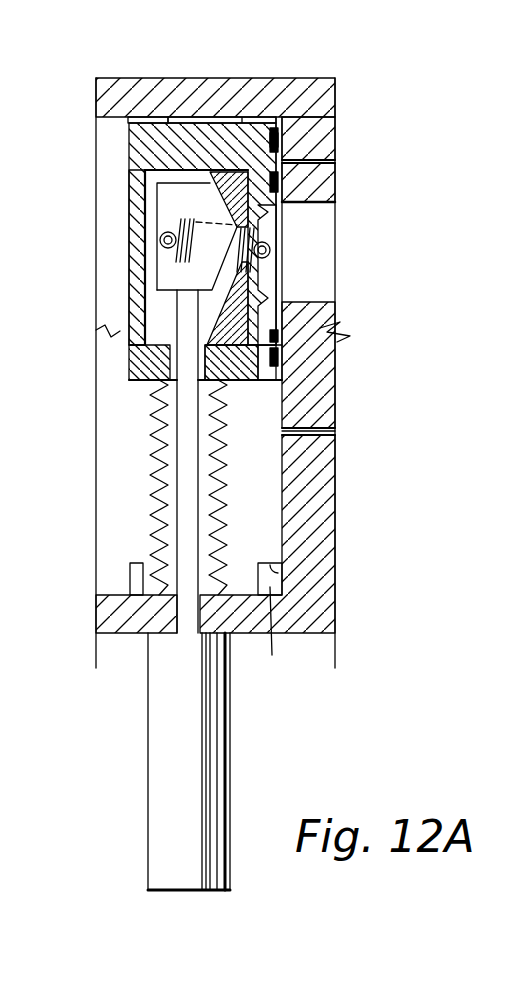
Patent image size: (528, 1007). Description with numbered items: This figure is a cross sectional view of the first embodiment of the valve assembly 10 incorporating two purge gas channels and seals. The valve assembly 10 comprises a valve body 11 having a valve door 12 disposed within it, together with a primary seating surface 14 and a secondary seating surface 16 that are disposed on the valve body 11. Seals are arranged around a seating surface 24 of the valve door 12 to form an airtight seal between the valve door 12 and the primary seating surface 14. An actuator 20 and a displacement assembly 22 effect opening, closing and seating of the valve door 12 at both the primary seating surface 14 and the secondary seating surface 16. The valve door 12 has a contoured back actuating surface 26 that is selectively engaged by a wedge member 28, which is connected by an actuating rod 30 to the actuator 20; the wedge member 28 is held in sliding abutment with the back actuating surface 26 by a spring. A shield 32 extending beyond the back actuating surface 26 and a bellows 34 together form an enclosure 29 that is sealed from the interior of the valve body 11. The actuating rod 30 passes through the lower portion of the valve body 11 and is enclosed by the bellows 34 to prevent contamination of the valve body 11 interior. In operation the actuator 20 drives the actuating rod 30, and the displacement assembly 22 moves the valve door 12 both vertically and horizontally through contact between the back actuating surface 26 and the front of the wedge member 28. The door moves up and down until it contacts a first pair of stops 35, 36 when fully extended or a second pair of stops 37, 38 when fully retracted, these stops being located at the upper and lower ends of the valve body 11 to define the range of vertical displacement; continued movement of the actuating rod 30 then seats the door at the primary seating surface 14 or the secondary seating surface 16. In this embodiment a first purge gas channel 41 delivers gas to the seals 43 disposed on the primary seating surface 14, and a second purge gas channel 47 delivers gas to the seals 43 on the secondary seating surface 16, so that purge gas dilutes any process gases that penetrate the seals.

The valve assembly 10 is at (128, 58).
The valve body 11 is at (292, 78).
The valve door 12 is at (263, 382).
The primary seating surface 14 is at (283, 118).
The secondary seating surface 16 is at (282, 292).
The actuator 20 is at (148, 757).
The displacement assembly 22 is at (130, 228).
The seating surface 24 is at (283, 237).
The back actuating surface 26 is at (212, 193).
The wedge member 28 is at (146, 182).
The enclosure 29 is at (150, 268).
The actuating rod 30 is at (185, 544).
The shield 32 is at (129, 145).
The bellows 34 is at (158, 490).
The stop 35 is at (152, 120).
The stop 36 is at (258, 120).
The stop 37 is at (130, 578).
The stop 38 is at (274, 636).
The first purge gas channel 41 is at (332, 173).
The seal 43 is at (283, 143).
The second purge gas channel 47 is at (328, 440).